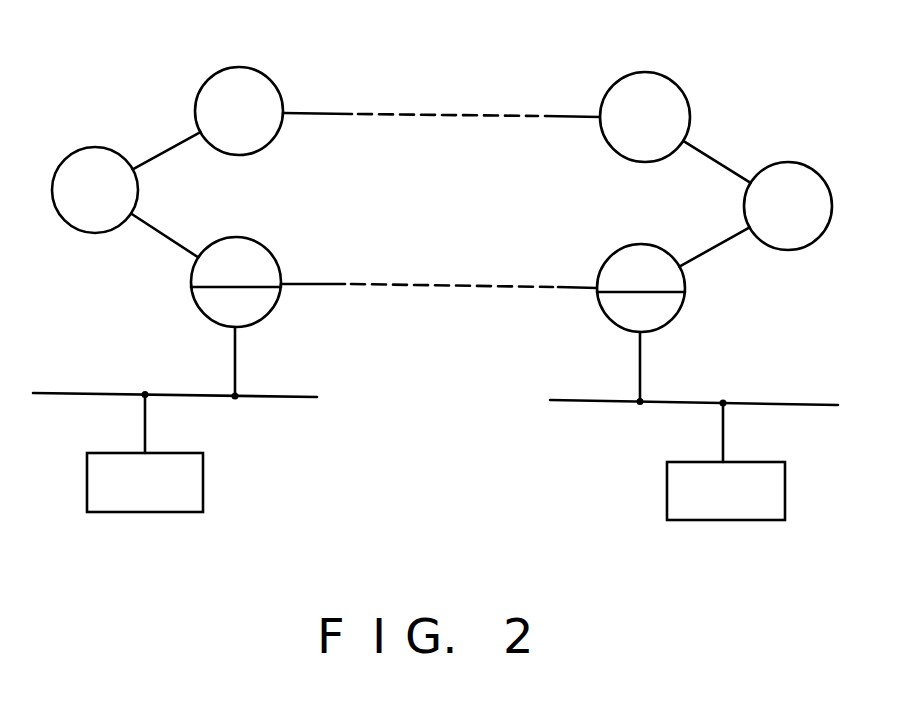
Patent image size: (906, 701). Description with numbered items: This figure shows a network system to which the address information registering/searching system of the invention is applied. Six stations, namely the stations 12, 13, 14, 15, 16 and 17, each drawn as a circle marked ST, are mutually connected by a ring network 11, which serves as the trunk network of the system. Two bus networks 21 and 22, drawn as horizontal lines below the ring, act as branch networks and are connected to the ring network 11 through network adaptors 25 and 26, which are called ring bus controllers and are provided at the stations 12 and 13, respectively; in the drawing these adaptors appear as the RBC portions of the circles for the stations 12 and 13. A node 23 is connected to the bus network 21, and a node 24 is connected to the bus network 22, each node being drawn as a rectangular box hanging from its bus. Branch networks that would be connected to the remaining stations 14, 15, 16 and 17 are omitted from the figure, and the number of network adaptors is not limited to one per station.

The ring network 11 is at (562, 104).
The station 12 is at (250, 278).
The station 13 is at (620, 282).
The station 14 is at (791, 168).
The station 15 is at (676, 94).
The station 16 is at (243, 69).
The station 17 is at (97, 154).
The bus network 21 is at (157, 391).
The bus network 22 is at (785, 400).
The node 23 is at (204, 486).
The node 24 is at (786, 494).
The network adaptor 25 is at (258, 317).
The network adaptor 26 is at (632, 326).